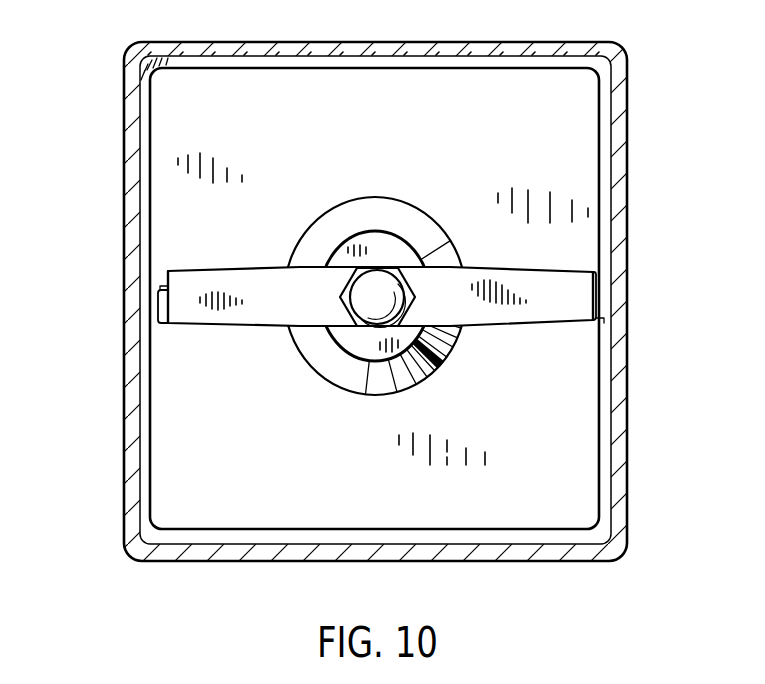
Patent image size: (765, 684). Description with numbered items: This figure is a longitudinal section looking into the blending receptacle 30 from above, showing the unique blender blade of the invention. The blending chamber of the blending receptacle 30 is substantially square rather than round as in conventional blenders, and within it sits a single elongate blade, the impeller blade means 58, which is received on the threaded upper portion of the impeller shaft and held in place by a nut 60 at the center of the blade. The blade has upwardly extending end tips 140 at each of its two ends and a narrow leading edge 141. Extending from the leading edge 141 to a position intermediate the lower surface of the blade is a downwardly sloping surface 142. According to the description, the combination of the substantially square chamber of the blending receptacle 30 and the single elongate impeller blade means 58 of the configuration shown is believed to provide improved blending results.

The blending receptacle 30 is at (628, 128).
The impeller blade means 58 is at (483, 318).
The nut 60 is at (383, 280).
The end tips 140 is at (165, 302).
The leading edge 141 is at (250, 268).
The downwardly sloping surface 142 is at (159, 291).